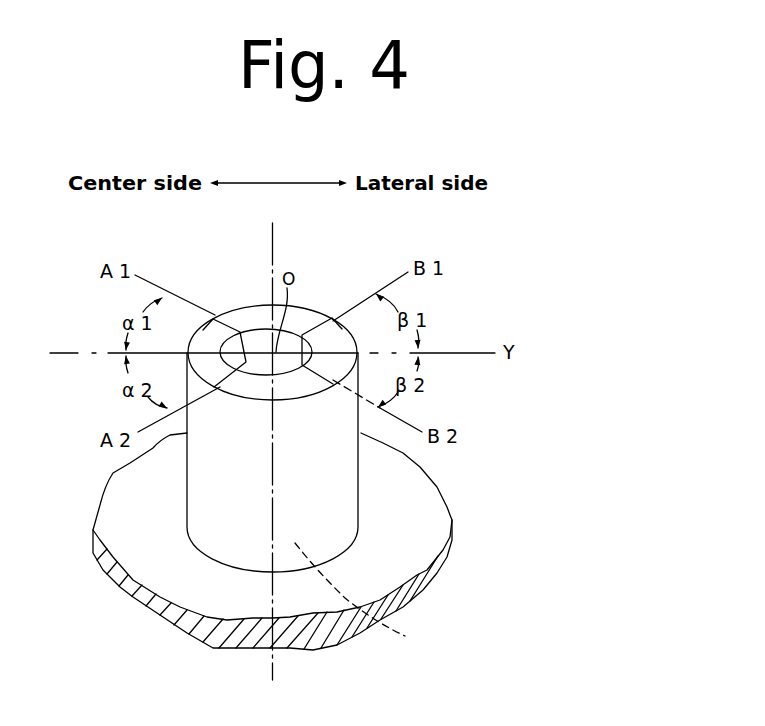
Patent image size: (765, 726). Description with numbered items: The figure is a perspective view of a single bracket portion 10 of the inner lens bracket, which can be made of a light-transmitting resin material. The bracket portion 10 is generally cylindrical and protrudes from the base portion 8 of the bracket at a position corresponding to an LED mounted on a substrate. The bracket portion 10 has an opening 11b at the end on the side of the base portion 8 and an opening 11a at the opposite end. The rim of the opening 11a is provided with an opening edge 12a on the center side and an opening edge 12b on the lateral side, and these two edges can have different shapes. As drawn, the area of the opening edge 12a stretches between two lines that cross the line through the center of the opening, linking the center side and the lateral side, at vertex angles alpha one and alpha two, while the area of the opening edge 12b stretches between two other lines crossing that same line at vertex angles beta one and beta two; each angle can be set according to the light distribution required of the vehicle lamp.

The base portion 8 is at (422, 518).
The bracket portion 10 is at (303, 290).
The opening 11a is at (258, 337).
The opening 11b is at (371, 594).
The opening edge 12a is at (206, 334).
The opening edge 12b is at (338, 337).